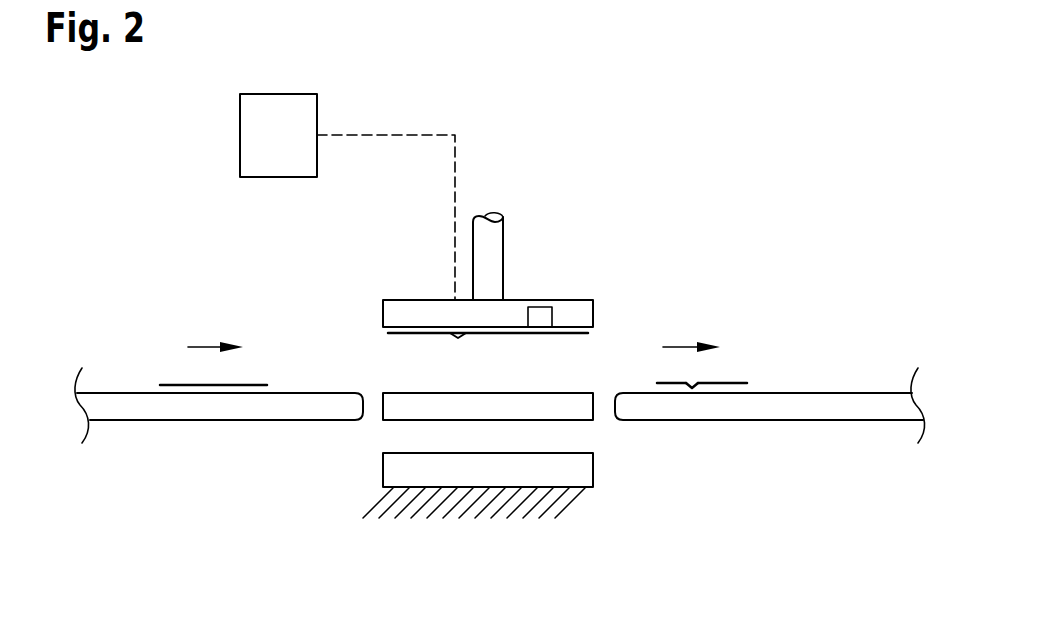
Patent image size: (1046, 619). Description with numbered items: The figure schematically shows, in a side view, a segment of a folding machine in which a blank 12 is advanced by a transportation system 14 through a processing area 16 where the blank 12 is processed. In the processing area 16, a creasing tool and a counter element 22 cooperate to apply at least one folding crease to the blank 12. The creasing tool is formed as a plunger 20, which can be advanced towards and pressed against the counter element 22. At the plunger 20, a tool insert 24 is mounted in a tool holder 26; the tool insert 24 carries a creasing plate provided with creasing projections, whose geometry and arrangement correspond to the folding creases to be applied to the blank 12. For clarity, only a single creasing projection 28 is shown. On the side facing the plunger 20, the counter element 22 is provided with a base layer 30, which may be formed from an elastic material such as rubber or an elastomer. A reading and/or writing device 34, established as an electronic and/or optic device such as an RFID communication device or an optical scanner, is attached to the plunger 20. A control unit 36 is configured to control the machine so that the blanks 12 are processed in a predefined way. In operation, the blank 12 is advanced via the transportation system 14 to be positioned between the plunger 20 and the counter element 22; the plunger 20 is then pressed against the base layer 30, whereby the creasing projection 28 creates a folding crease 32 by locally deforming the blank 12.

The blank 12 is at (175, 384).
The transportation system 14 is at (178, 421).
The processing area 16 is at (516, 238).
The plunger 20 is at (583, 300).
The counter element 22 is at (587, 470).
The tool insert 24 is at (570, 334).
The tool holder 26 is at (415, 305).
The creasing projection 28 is at (460, 336).
The base layer 30 is at (482, 395).
The folding crease 32 is at (690, 383).
The reading and/or writing device 34 is at (537, 305).
The control unit 36 is at (245, 132).